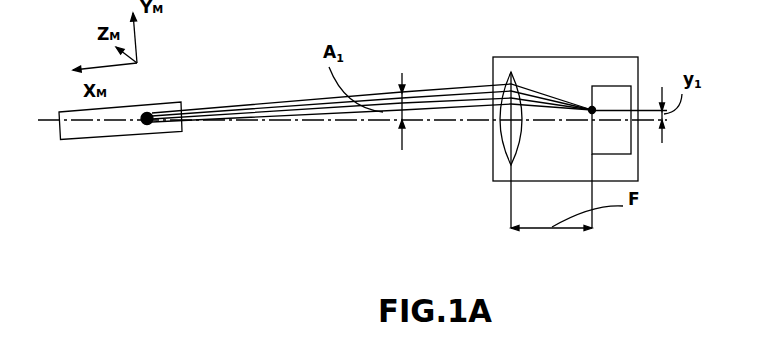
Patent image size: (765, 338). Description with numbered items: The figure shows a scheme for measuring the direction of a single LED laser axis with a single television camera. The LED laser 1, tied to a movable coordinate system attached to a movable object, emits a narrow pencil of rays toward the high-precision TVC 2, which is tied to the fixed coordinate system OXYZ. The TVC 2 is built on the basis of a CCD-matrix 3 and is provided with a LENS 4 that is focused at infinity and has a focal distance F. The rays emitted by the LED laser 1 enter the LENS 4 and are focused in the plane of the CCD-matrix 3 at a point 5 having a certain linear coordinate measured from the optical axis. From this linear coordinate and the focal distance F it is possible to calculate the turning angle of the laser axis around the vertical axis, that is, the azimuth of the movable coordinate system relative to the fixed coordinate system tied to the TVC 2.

The LED laser 1 is at (153, 132).
The TVC 2 is at (493, 152).
The CCD-matrix 3 is at (592, 86).
The LENS 4 is at (507, 81).
The point 5 is at (588, 108).